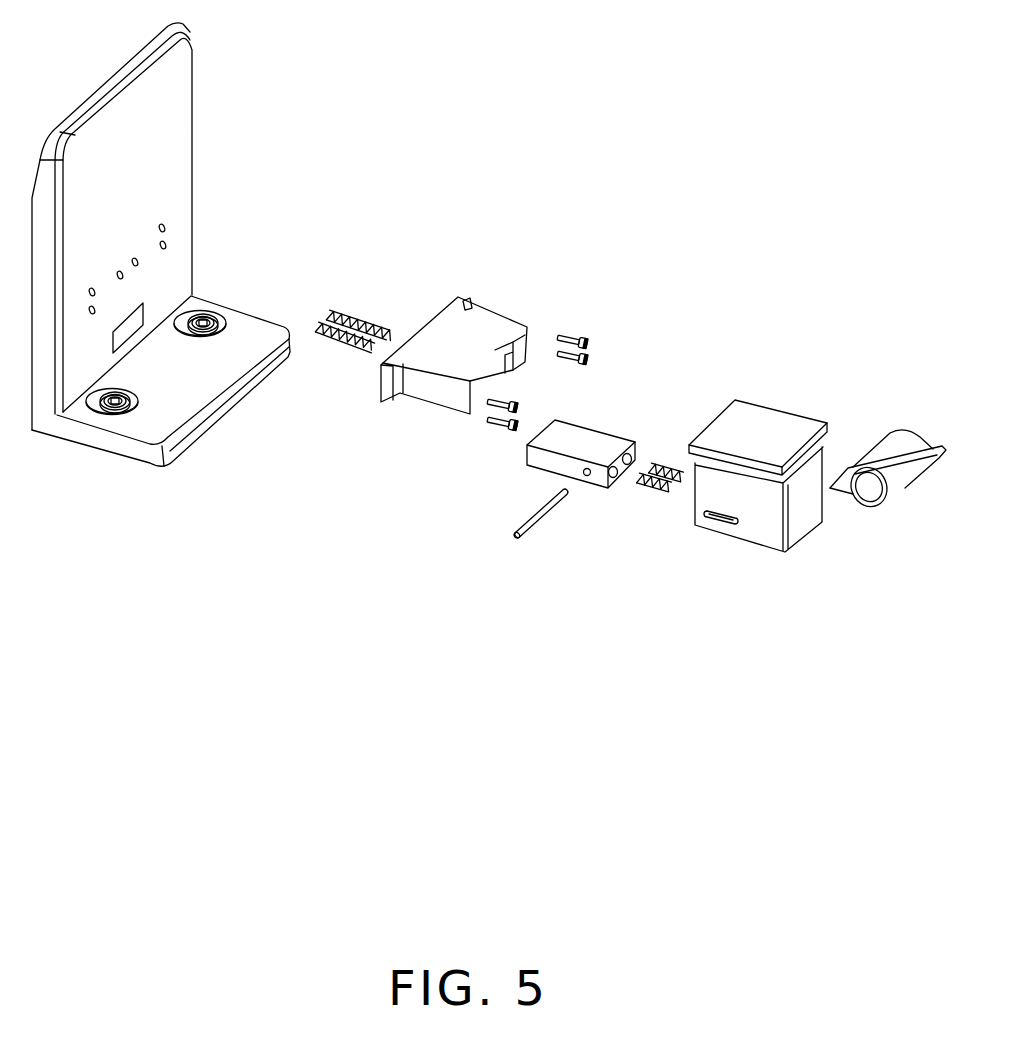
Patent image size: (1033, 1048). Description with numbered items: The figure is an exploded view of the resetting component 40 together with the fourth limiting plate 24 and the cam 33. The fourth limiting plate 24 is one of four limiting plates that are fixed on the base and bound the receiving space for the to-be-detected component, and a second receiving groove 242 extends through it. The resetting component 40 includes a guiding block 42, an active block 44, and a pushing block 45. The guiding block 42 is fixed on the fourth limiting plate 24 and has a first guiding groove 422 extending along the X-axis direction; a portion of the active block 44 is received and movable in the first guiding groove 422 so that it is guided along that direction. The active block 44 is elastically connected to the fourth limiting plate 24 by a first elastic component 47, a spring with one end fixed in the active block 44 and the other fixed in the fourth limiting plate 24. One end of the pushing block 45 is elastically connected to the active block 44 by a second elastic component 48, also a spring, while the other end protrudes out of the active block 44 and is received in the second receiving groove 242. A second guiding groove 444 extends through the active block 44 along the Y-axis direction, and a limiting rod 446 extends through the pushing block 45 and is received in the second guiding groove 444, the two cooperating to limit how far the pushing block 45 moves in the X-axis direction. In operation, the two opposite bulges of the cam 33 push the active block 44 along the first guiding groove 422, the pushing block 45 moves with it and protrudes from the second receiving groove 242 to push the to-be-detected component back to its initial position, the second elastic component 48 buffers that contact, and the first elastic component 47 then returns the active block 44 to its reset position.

The fourth limiting plate 24 is at (155, 88).
The second receiving groove 242 is at (143, 327).
The resetting component 40 is at (606, 165).
The first elastic component 47 is at (353, 312).
The guiding block 42 is at (473, 323).
The first guiding groove 422 is at (524, 349).
The pushing block 45 is at (582, 435).
The limiting rod 446 is at (543, 513).
The second elastic component 48 is at (668, 458).
The active block 44 is at (767, 422).
The second guiding groove 444 is at (721, 524).
The cam 33 is at (902, 447).